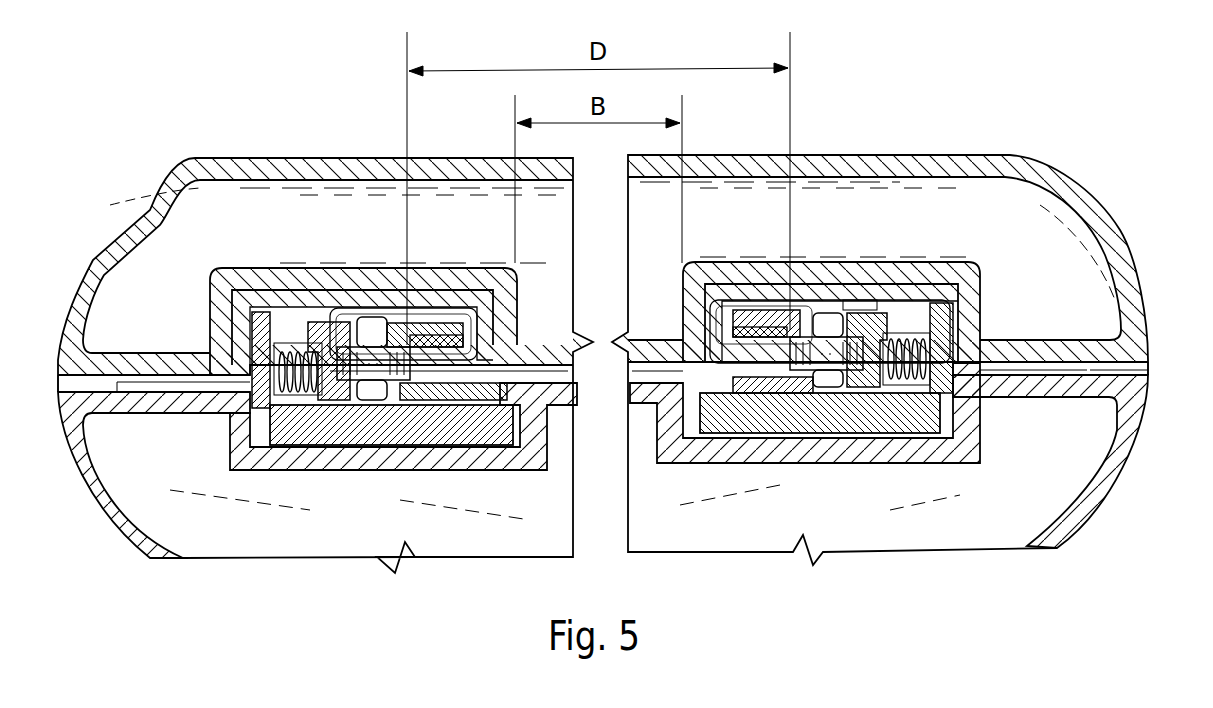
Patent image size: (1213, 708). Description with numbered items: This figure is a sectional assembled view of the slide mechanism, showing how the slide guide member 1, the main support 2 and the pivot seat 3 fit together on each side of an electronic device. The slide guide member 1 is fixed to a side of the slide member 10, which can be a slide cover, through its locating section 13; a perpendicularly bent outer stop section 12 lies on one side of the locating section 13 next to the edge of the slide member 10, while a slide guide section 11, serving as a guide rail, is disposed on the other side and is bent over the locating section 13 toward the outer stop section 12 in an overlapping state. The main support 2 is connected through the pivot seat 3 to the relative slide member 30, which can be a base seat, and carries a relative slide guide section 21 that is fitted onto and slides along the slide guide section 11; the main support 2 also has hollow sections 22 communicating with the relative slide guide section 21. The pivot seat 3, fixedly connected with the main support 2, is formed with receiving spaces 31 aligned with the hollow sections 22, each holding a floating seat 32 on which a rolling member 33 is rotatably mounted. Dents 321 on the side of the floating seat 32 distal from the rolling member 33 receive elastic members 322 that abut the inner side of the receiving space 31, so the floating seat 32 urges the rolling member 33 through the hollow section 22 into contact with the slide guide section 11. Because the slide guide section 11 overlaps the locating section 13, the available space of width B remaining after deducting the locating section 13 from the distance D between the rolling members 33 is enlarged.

The slide guide member 1 is at (775, 310).
The main support 2 is at (735, 382).
The pivot seat 3 is at (905, 407).
The slide member 10 is at (958, 136).
The slide guide section 11 is at (760, 372).
The outer stop section 12 is at (950, 327).
The locating section 13 is at (898, 290).
The relative slide guide section 21 is at (757, 315).
The hollow section 22 is at (806, 320).
The relative slide member 30 is at (1118, 372).
The receiving space 31 is at (907, 283).
The floating seat 32 is at (925, 305).
The rolling member 33 is at (858, 378).
The dent 321 is at (898, 385).
The elastic member 322 is at (957, 400).